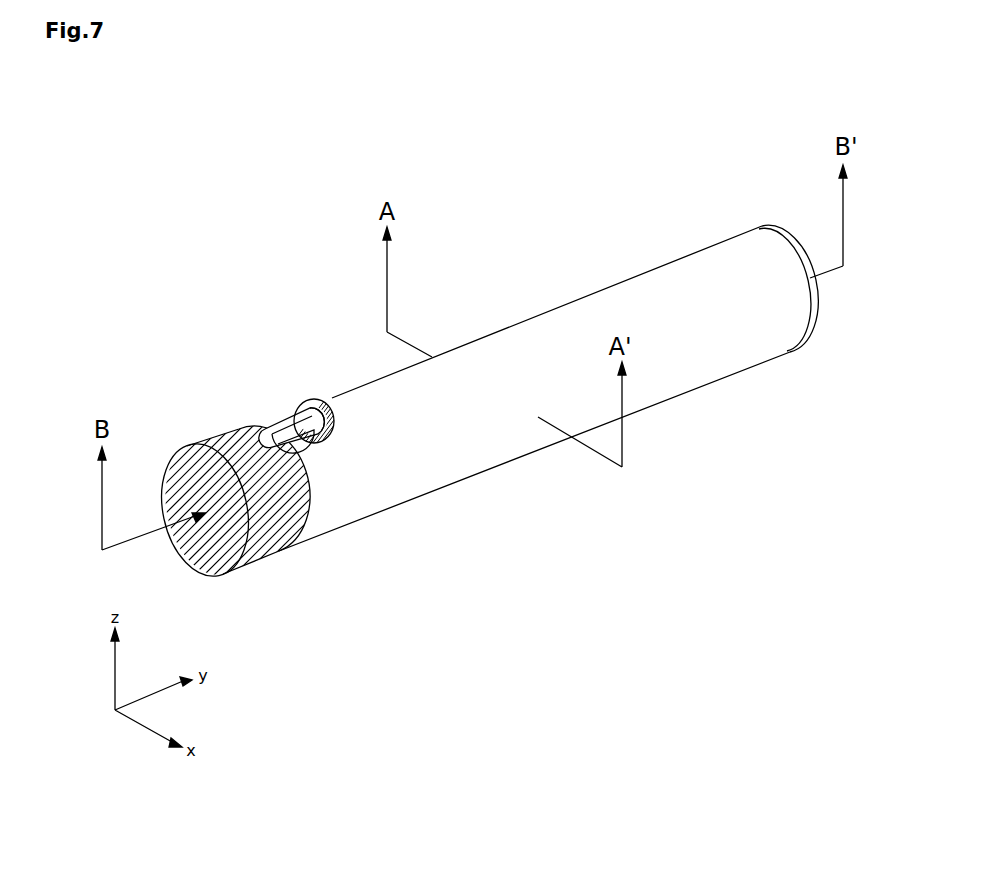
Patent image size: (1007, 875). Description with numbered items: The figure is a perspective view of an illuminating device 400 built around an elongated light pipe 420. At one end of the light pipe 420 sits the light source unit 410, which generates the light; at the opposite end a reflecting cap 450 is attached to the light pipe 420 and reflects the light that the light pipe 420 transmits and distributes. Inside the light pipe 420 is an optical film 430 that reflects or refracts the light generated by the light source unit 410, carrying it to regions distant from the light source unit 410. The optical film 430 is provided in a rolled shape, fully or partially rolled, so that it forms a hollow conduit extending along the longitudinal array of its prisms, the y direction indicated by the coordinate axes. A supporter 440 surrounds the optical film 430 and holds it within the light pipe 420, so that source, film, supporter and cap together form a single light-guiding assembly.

The illuminating device 400 is at (566, 119).
The light source unit 410 is at (272, 530).
The light pipe 420 is at (363, 497).
The optical film 430 is at (278, 422).
The supporter 440 is at (318, 402).
The reflecting cap 450 is at (810, 313).